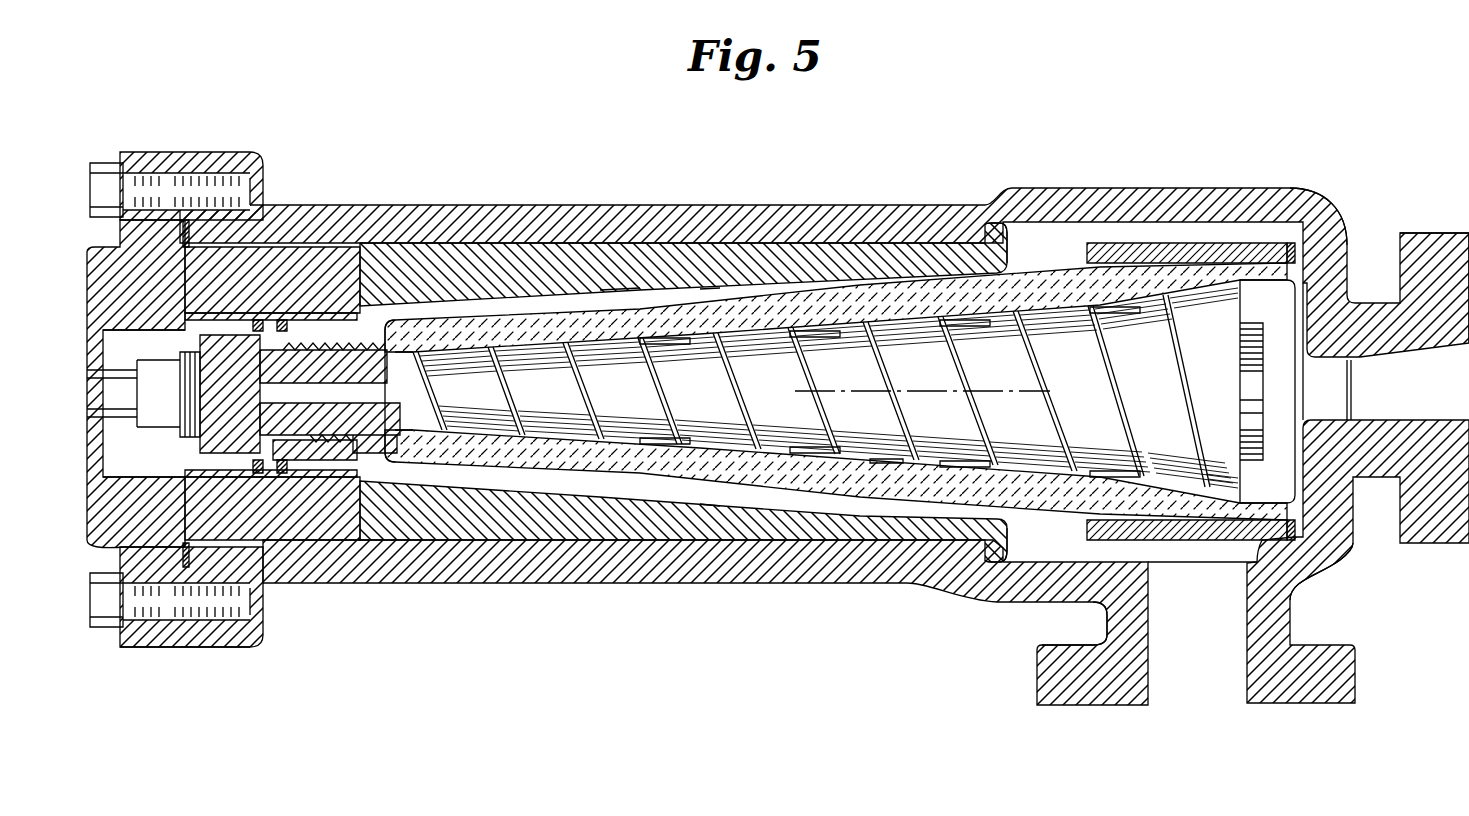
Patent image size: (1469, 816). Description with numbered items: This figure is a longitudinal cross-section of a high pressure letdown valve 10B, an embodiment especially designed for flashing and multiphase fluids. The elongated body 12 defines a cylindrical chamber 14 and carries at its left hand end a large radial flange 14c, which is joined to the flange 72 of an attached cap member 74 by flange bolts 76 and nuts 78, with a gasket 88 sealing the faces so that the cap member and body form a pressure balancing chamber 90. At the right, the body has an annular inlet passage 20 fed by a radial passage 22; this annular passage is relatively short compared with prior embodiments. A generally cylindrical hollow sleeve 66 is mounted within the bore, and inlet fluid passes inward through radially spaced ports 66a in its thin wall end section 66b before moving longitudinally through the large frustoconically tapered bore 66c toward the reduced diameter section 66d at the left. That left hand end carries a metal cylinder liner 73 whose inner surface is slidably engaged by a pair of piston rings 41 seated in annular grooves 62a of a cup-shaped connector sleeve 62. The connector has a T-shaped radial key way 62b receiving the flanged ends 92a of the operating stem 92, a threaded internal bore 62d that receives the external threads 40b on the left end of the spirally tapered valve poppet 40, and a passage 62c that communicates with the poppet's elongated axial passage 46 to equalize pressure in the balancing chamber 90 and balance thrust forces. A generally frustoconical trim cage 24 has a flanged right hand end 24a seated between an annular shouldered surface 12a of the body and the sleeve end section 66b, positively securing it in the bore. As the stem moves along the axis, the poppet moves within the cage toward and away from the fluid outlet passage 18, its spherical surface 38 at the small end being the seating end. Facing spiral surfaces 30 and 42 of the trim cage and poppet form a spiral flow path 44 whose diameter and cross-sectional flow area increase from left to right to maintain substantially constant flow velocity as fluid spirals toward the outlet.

The high pressure letdown valve 10B is at (727, 164).
The body 12 is at (713, 585).
The annular shouldered surface 12a is at (1307, 282).
The cylindrical chamber 14 is at (790, 247).
The radial flange 14c is at (236, 152).
The fluid outlet passage 18 is at (1397, 422).
The annular inlet passage 20 is at (1184, 228).
The radial passage 22 is at (1245, 680).
The trim cage 24 is at (557, 485).
The flanged right hand end 24a is at (1270, 252).
The spiral surface 30 is at (528, 356).
The spherical surface 38 is at (623, 334).
The valve poppet 40 is at (1146, 394).
The external threads 40b is at (375, 320).
The piston rings 41 is at (280, 319).
The spiral surface 42 is at (1147, 282).
The spiral flow path 44 is at (1110, 502).
The axial passage 46 is at (405, 398).
The connector sleeve 62 is at (365, 457).
The annular grooves 62a is at (258, 393).
The T-shaped radial key way 62b is at (185, 445).
The passage 62c is at (270, 542).
The threaded internal bore 62d is at (300, 319).
The hollow sleeve 66 is at (487, 262).
The ports 66a is at (1000, 240).
The thin wall end section 66b is at (1217, 542).
The frustoconically tapered bore 66c is at (717, 286).
The reduced diameter section 66d is at (257, 316).
The flange 72 is at (150, 655).
The metal cylinder liner 73 is at (343, 542).
The cap member 74 is at (138, 643).
The flange bolts 76 is at (155, 188).
The nuts 78 is at (105, 180).
The gasket 88 is at (195, 232).
The pressure balancing chamber 90 is at (134, 448).
The operating stem 92 is at (113, 388).
The flanged ends 92a is at (170, 352).